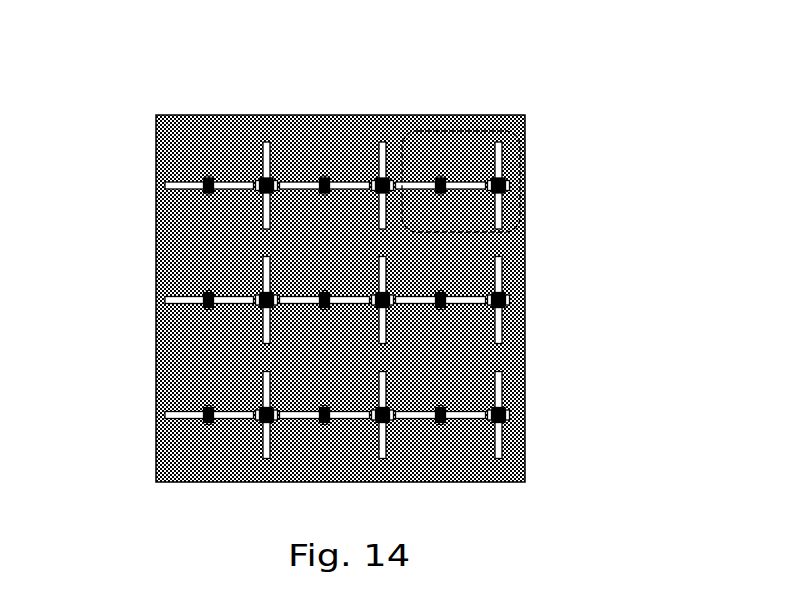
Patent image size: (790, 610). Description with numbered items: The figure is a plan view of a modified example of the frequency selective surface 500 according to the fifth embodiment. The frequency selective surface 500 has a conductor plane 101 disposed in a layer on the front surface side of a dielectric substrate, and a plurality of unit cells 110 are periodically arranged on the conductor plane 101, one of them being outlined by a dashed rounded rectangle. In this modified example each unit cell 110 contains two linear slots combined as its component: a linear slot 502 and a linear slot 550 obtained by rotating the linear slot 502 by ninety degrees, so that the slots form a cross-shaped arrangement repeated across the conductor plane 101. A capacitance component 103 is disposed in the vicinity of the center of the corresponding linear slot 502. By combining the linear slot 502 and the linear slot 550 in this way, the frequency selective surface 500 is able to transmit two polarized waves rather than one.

The frequency selective surface 500 is at (100, 103).
The conductor plane 101 is at (202, 115).
The linear slot 550 is at (414, 180).
The unit cell 110 is at (482, 131).
The capacitance component 103 is at (508, 185).
The linear slot 502 is at (525, 212).